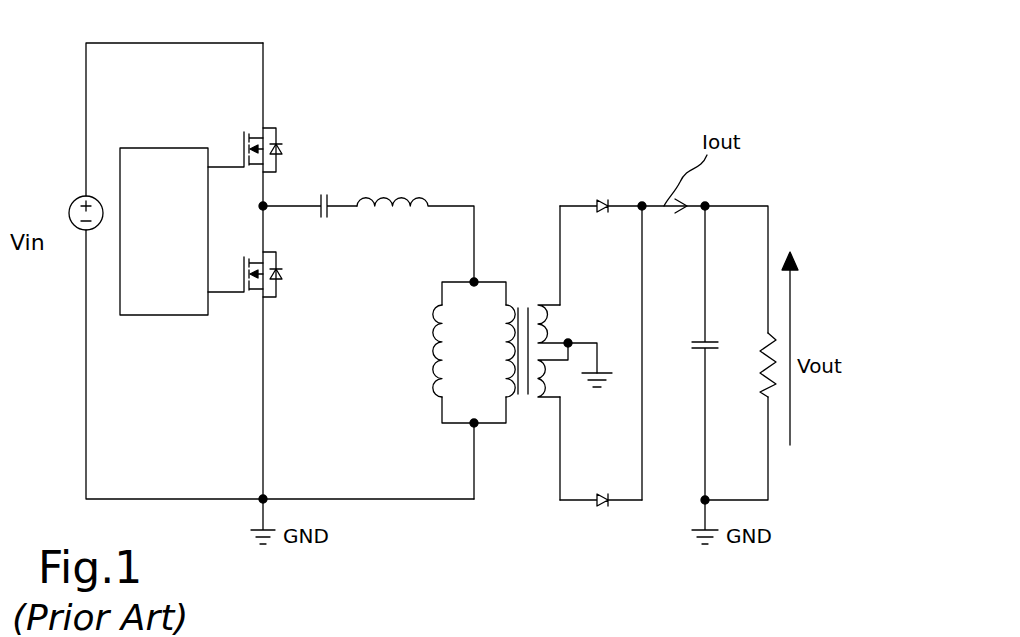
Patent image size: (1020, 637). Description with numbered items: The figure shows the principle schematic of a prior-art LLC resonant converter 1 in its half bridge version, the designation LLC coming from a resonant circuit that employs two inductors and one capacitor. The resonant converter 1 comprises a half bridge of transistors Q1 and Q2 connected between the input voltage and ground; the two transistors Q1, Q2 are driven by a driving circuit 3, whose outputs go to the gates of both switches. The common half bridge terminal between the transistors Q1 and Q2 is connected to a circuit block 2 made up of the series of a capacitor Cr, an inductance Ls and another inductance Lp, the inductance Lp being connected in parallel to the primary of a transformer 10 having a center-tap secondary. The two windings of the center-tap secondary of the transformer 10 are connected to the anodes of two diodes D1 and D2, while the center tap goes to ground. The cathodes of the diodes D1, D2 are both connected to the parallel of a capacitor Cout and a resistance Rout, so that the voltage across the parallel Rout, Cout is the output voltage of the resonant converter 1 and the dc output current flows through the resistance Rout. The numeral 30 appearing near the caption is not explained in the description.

The resonant converter 1 is at (290, 80).
The circuit block 2 is at (378, 156).
The driving circuit 3 is at (148, 315).
The transformer 10 is at (525, 290).
The sheet number 30 is at (245, 626).
The transistor Q1 is at (259, 144).
The transistor Q2 is at (259, 280).
The capacitor Cr is at (310, 191).
The inductance Ls is at (415, 223).
The inductance Lp is at (456, 388).
The diode D1 is at (601, 223).
The diode D2 is at (601, 485).
The capacitor Cout is at (682, 353).
The resistance Rout is at (743, 353).